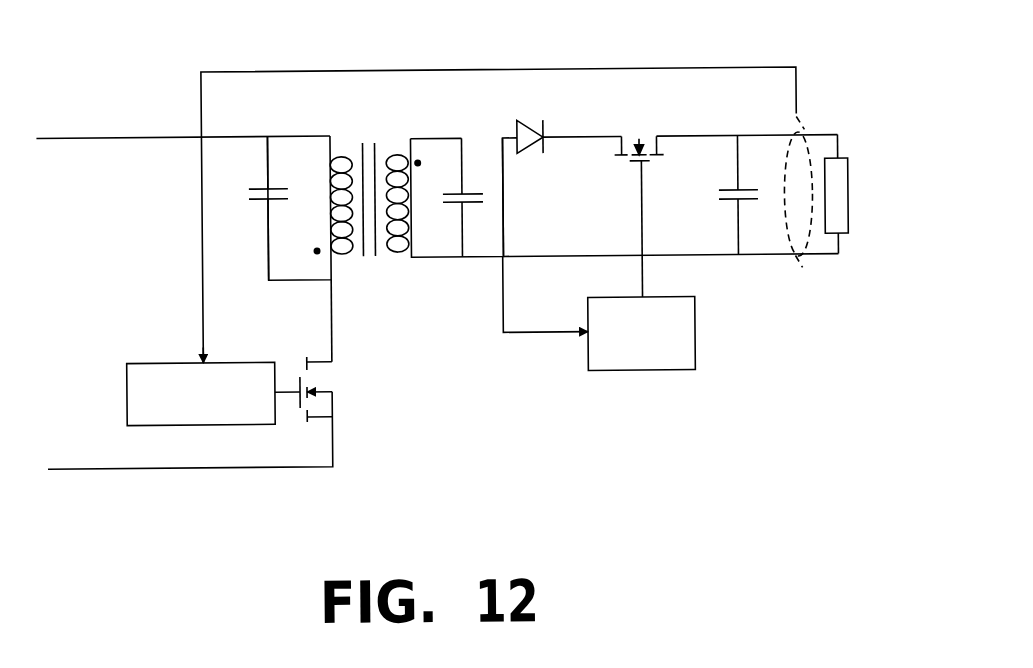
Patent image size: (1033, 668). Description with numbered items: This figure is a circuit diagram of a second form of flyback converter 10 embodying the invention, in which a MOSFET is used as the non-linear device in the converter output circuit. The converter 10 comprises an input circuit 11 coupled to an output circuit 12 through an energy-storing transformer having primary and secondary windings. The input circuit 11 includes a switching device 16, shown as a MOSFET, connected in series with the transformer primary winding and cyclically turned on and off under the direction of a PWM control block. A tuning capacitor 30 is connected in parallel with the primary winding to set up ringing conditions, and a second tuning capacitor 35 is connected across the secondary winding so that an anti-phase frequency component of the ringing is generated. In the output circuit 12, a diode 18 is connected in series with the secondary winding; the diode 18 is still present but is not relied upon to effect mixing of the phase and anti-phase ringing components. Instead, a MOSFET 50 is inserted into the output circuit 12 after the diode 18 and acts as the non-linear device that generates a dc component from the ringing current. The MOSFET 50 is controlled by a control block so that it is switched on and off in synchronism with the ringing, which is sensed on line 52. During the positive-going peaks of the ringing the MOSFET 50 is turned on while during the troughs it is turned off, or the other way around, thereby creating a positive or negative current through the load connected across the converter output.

The flyback converter 10 is at (148, 104).
The input circuit 11 is at (155, 251).
The output circuit 12 is at (589, 216).
The switching device 16 is at (298, 378).
The diode 18 is at (545, 137).
The tuning capacitor 30 is at (265, 201).
The second tuning capacitor 35 is at (458, 207).
The MOSFET 50 is at (647, 134).
The line 52 is at (502, 298).